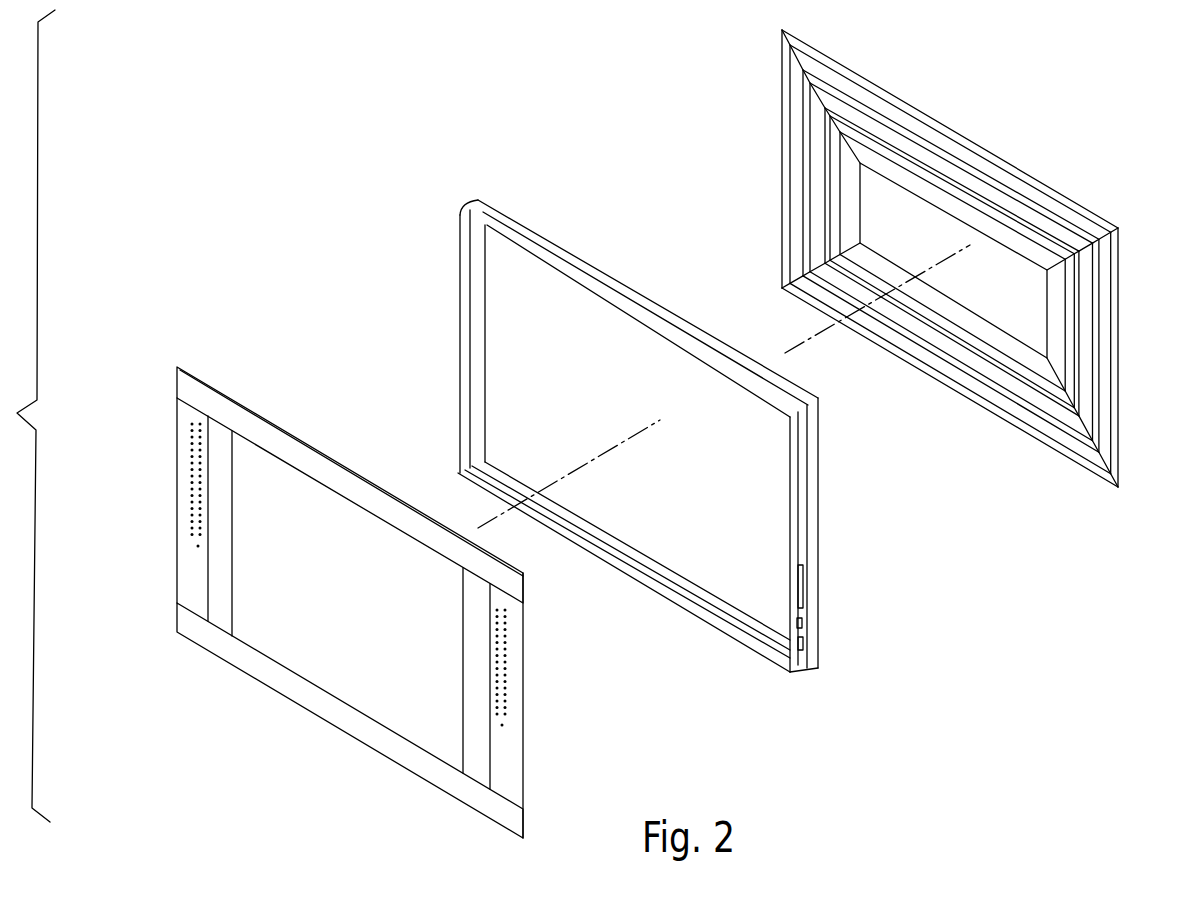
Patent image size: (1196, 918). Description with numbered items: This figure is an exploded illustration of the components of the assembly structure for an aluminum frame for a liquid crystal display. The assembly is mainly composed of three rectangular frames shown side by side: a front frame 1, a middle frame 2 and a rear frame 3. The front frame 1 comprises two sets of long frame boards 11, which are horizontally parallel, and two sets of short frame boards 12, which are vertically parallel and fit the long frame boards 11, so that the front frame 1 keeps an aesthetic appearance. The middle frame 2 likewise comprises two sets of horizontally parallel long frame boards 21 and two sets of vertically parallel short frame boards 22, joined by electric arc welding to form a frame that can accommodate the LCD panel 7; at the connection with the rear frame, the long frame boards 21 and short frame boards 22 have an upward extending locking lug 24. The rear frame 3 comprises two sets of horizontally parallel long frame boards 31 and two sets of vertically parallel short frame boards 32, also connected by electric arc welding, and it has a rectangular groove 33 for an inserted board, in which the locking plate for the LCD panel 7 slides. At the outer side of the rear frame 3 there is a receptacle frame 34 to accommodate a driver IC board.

The front frame 1 is at (345, 602).
The long frame boards 11 is at (343, 470).
The short frame boards 12 is at (183, 553).
The middle frame 2 is at (636, 464).
The long frame boards 21 is at (638, 436).
The short frame boards 22 is at (461, 343).
The locking lug 24 is at (677, 577).
The LCD panel 7 is at (805, 598).
The rear frame 3 is at (951, 291).
The long frame boards 31 is at (968, 147).
The short frame boards 32 is at (782, 187).
The rectangular groove 33 is at (817, 213).
The receptacle frame 34 is at (886, 262).